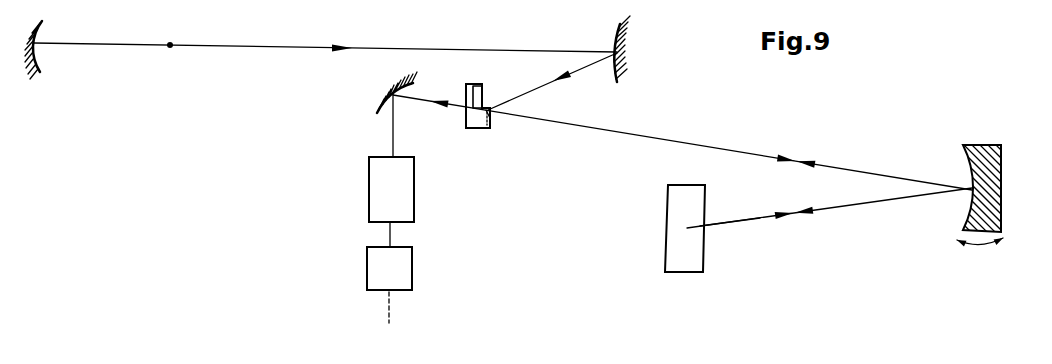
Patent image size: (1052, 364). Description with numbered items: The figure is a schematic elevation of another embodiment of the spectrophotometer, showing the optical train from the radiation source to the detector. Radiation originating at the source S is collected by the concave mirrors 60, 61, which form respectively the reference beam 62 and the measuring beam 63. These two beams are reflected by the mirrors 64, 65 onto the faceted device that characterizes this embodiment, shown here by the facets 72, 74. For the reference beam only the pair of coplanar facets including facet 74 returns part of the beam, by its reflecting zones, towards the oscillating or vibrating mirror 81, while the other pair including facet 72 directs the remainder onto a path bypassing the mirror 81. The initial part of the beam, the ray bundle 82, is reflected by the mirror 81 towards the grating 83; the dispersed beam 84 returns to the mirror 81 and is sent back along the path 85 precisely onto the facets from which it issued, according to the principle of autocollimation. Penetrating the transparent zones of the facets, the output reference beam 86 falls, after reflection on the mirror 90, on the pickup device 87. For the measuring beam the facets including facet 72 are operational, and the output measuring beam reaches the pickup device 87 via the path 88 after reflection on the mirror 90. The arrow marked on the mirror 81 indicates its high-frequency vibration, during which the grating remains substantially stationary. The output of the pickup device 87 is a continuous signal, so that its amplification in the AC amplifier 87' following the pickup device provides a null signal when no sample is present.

The concave mirror 60 is at (68, 62).
The concave mirror 61 is at (40, 63).
The reference beam 62 is at (325, 35).
The measuring beam 63 is at (413, 50).
The mirror 64 is at (656, 49).
The mirror 65 is at (620, 37).
The facet 72 is at (483, 85).
The facet 74 is at (490, 118).
The oscillating mirror 81 is at (1002, 187).
The ray bundle 82 is at (670, 104).
The grating 83 is at (698, 242).
The dispersed beam 84 is at (747, 219).
The return path 85 is at (874, 170).
The output reference beam 86 is at (365, 125).
The pickup device 87 is at (448, 189).
The AC amplifier 87' is at (477, 284).
The output measuring beam 88 is at (393, 132).
The mirror 90 is at (387, 96).
The source S is at (171, 43).